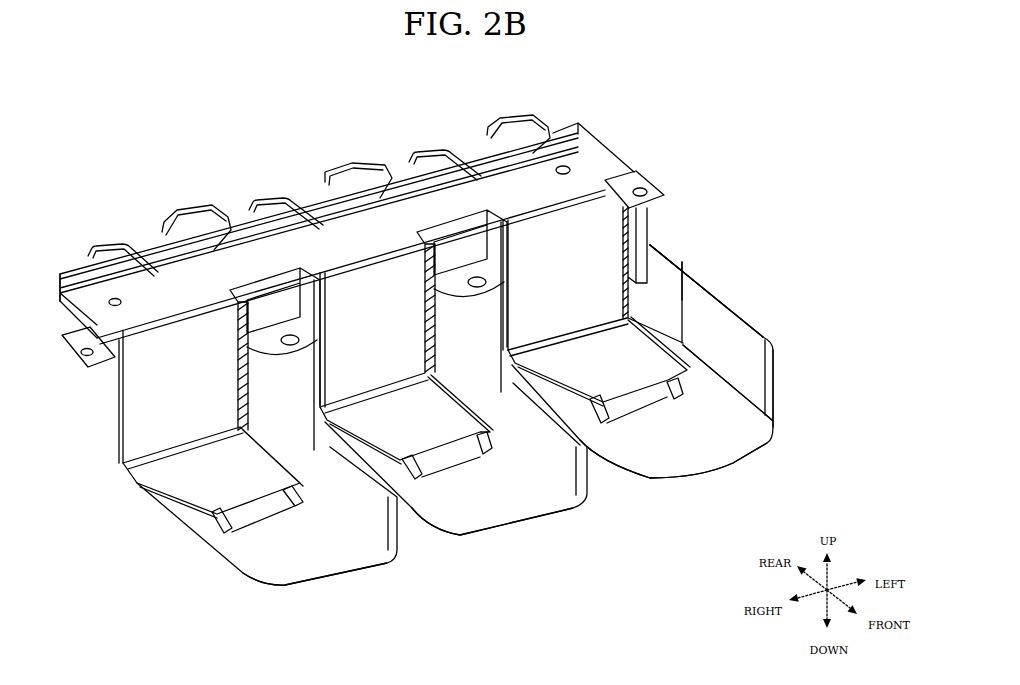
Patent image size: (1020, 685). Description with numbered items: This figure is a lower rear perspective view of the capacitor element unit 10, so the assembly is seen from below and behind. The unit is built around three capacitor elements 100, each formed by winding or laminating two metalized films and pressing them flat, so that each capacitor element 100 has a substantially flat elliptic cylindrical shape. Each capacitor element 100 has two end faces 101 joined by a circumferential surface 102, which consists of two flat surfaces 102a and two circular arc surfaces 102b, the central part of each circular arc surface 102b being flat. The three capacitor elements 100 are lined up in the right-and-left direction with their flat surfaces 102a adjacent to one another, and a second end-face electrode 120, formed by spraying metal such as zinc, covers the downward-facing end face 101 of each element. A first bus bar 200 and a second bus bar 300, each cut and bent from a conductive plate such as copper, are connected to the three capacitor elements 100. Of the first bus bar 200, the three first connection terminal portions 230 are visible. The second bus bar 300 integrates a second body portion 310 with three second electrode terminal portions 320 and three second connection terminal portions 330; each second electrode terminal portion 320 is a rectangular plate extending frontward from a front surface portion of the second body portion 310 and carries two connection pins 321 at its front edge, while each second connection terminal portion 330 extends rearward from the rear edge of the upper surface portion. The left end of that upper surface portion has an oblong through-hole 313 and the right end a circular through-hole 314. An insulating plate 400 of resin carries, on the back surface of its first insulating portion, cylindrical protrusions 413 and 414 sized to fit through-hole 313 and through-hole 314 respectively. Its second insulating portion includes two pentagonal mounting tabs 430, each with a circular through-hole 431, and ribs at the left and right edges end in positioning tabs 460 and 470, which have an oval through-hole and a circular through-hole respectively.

The capacitor element unit 10 is at (800, 283).
The capacitor element 100 is at (360, 573).
The end face 101 is at (727, 447).
The circumferential surface 102 is at (682, 193).
The flat surface 102a is at (708, 305).
The circular arc surface 102b is at (667, 265).
The second end-face electrode 120 is at (290, 573).
The first bus bar 200 is at (550, 122).
The first connection terminal portion 230 is at (177, 208).
The second bus bar 300 is at (118, 447).
The second body portion 310 is at (383, 280).
The through-hole 313 is at (570, 177).
The through-hole 314 is at (64, 272).
The second electrode terminal portion 320 is at (183, 490).
The connection pin 321 is at (280, 519).
The second connection terminal portion 330 is at (103, 242).
The insulating plate 400 is at (618, 143).
The protrusion 413 is at (560, 176).
The protrusion 414 is at (117, 307).
The mounting tab 430 is at (313, 335).
The through-hole 431 is at (290, 348).
The positioning tab 460 is at (660, 180).
The positioning tab 470 is at (77, 360).